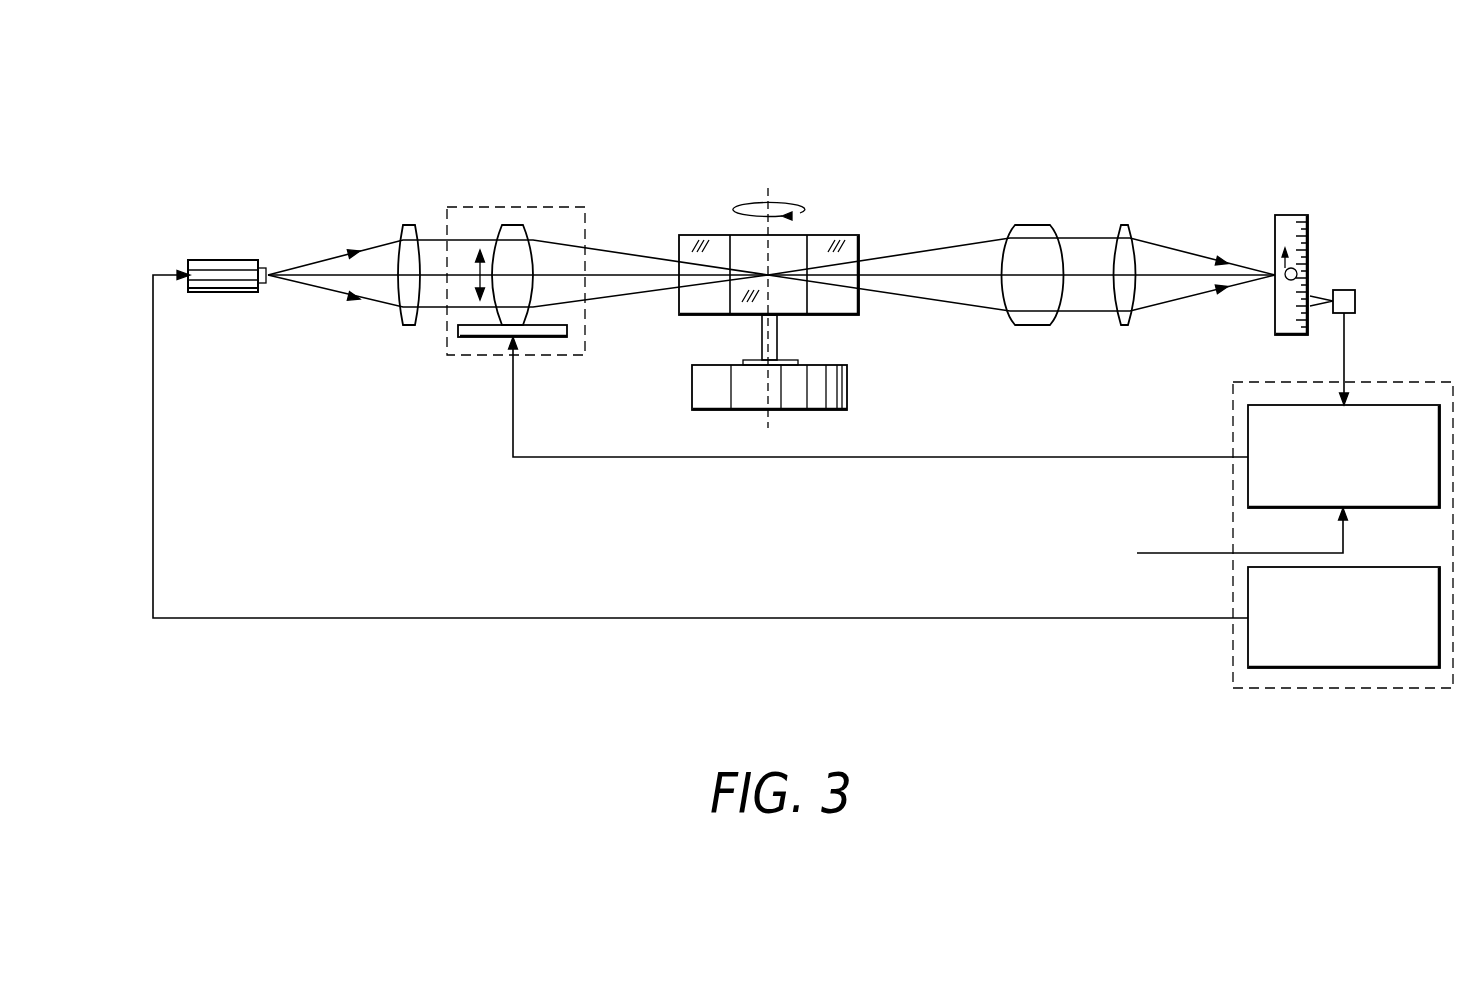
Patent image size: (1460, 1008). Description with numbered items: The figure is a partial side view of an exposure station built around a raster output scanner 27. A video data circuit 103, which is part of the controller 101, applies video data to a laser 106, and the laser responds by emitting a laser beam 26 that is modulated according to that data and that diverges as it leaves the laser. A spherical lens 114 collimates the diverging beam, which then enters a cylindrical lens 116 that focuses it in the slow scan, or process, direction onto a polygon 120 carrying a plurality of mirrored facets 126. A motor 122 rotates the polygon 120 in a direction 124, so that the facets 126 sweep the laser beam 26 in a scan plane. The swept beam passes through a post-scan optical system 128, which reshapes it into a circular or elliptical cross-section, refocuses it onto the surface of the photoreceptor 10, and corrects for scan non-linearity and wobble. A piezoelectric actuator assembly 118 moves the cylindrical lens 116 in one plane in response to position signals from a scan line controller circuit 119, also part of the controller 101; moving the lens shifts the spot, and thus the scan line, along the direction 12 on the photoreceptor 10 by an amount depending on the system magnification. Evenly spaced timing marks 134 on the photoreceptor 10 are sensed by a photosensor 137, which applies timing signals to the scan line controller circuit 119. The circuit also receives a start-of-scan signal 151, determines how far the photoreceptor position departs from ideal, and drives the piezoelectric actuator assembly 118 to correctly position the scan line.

The raster output scanner 27 is at (995, 101).
The laser beam 26 is at (337, 252).
The laser 106 is at (225, 293).
The spherical lens 114 is at (410, 327).
The cylindrical lens 116 is at (512, 225).
The piezoelectric actuator assembly 118 is at (483, 356).
The polygon 120 is at (842, 317).
The motor 122 is at (692, 390).
The direction of rotation 124 is at (787, 200).
The mirrored facets 126 is at (785, 243).
The post-scan optical system 128 is at (1138, 202).
The photoreceptor 10 is at (1286, 337).
The direction 12 is at (1283, 262).
The timing marks 134 is at (1305, 232).
The photosensor 137 is at (1355, 303).
The controller 101 is at (1230, 414).
The scan line controller circuit 119 is at (1307, 510).
The start-of-scan signal 151 is at (1210, 552).
The video data circuit 103 is at (1365, 565).